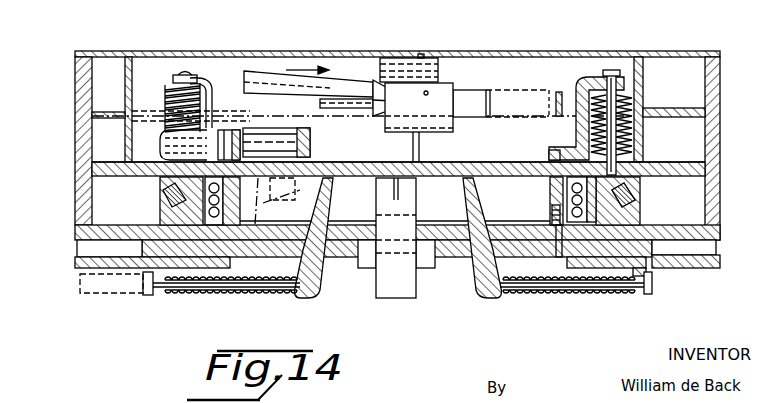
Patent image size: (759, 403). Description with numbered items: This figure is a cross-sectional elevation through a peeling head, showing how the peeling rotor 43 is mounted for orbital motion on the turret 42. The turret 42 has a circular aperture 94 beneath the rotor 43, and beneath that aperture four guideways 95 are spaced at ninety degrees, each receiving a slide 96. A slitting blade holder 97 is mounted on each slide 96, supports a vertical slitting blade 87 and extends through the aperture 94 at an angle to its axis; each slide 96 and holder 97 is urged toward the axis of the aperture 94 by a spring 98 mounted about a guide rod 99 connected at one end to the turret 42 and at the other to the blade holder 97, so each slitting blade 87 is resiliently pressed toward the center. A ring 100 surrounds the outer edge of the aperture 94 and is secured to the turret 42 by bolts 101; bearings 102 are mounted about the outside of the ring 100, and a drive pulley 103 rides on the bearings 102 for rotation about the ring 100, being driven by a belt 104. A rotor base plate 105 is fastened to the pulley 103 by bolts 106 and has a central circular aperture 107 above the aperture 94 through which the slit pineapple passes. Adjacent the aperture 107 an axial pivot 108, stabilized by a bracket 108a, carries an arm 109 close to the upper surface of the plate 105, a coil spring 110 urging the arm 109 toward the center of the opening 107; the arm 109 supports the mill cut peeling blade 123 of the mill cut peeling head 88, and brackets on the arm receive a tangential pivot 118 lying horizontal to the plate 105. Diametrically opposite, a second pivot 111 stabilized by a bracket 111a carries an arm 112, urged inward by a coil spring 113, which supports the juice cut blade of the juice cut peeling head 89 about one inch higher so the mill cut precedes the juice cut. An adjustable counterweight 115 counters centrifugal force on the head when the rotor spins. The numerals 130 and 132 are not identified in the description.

The turret 42 is at (700, 241).
The peeling head rotor 43 is at (693, 92).
The vertical slitting blade 87 is at (455, 192).
The mill cut peeling head 88 is at (162, 152).
The juice cut peeling head 89 is at (356, 99).
The circular aperture 94 is at (548, 231).
The guideway 95 is at (706, 249).
The slide 96 is at (646, 260).
The slitting blade holder 97 is at (470, 178).
The spring 98 is at (203, 294).
The guide rod 99 is at (182, 294).
The ring 100 is at (548, 178).
The bolt 101 is at (559, 234).
The bearing 102 is at (550, 187).
The drive pulley 103 is at (160, 219).
The belt 104 is at (636, 199).
The rotor base plate 105 is at (690, 166).
The bolt 106 is at (650, 161).
The central circular aperture 107 is at (235, 171).
The peeling head axial pivot 108 is at (190, 76).
The bracket 108a is at (246, 70).
The arm 109 is at (228, 128).
The coil spring 110 is at (160, 98).
The second peeling head pivot 111 is at (612, 91).
The bracket 111a is at (590, 77).
The arm 112 is at (567, 98).
The coil spring 113 is at (630, 127).
The adjustable counterweight 115 is at (665, 104).
The tangential pivot 118 is at (275, 140).
The peeling blade 123 is at (375, 130).
The compartment 130 is at (118, 96).
The partition 132 is at (646, 70).